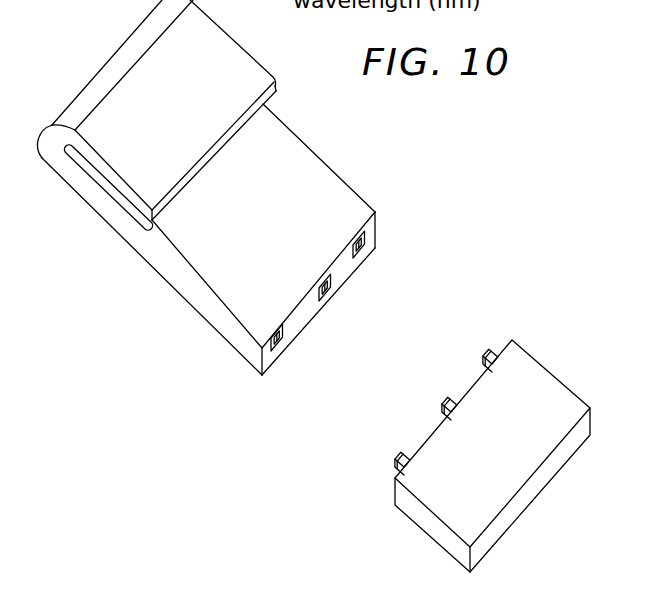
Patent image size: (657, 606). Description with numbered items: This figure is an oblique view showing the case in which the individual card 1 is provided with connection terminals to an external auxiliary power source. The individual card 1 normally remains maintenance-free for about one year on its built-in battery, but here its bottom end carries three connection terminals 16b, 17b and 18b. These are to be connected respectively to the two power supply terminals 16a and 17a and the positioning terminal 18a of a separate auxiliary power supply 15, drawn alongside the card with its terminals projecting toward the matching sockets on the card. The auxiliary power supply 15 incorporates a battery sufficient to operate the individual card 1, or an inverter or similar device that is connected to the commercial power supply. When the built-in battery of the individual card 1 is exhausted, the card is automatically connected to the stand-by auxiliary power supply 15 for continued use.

The individual card 1 is at (232, 205).
The auxiliary power supply 15 is at (481, 433).
The power supply terminal 16a is at (388, 450).
The power supply terminal 17a is at (442, 397).
The positioning terminal 18a is at (482, 352).
The connection terminal 16b is at (284, 354).
The connection terminal 17b is at (329, 302).
The connection terminal 18b is at (366, 254).